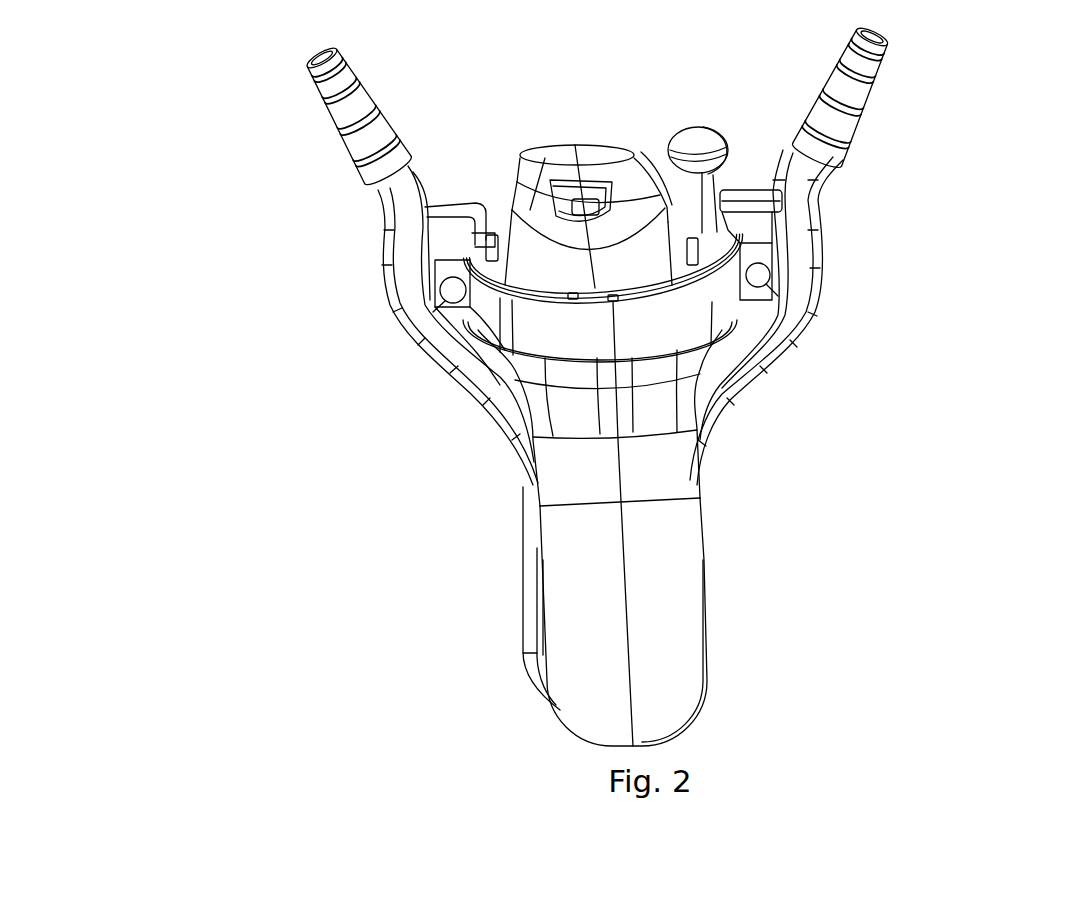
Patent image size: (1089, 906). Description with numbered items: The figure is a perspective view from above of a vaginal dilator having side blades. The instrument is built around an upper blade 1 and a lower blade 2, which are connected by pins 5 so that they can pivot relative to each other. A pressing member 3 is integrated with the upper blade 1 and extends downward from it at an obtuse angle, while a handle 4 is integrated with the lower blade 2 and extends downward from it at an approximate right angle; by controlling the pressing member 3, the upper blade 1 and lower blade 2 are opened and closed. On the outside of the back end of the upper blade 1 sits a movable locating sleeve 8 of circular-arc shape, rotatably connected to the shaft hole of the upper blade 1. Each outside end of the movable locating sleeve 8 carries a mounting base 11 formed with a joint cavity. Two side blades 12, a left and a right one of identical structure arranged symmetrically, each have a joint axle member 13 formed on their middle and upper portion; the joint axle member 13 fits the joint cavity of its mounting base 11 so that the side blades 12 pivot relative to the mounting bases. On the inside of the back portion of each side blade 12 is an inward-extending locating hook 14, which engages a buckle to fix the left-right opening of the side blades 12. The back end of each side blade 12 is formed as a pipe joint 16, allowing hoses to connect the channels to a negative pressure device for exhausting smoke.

The upper blade 1 is at (667, 577).
The lower blade 2 is at (526, 612).
The pressing member 3 is at (690, 137).
The handle 4 is at (598, 160).
The pins 5 is at (511, 225).
The movable locating sleeve 8 is at (640, 342).
The mounting base 11 is at (762, 288).
The side blade 12 is at (523, 420).
The joint axle member 13 is at (452, 290).
The locating hook 14 is at (757, 197).
The pipe joint 16 is at (367, 152).